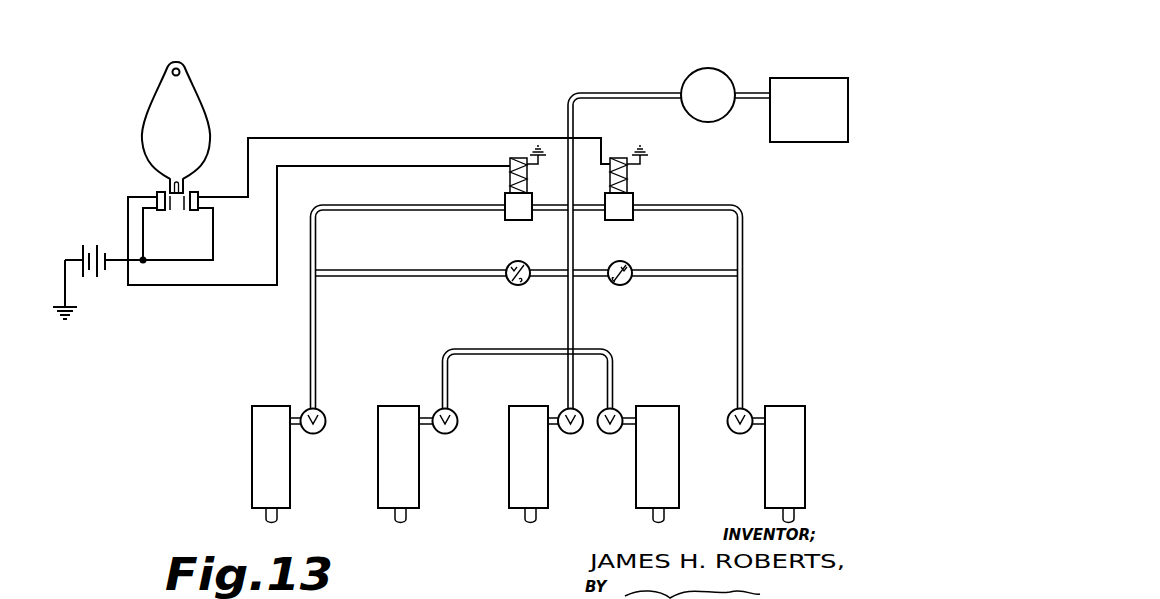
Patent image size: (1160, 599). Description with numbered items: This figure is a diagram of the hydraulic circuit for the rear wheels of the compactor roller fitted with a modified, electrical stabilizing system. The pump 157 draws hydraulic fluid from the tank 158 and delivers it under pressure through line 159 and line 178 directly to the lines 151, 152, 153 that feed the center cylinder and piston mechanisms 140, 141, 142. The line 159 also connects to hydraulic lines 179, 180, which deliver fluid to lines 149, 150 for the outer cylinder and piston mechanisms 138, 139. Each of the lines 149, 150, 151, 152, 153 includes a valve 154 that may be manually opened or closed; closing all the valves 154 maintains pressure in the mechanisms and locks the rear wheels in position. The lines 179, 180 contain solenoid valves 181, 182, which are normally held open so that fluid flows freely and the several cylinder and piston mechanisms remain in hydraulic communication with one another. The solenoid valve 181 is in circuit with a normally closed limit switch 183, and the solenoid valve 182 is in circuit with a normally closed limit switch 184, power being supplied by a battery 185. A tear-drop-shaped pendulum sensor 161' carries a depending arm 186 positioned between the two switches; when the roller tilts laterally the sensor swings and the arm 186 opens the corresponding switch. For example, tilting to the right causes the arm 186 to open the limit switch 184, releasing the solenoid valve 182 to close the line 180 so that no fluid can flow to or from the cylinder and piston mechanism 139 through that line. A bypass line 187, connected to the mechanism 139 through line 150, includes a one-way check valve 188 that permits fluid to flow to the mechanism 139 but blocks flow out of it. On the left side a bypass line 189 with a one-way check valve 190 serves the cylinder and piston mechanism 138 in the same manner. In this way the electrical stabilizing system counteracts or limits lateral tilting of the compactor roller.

The sensor 161' is at (138, 127).
The depending arm 186 is at (177, 185).
The limit switch 183 is at (157, 195).
The limit switch 184 is at (193, 193).
The battery 185 is at (93, 283).
The pump 157 is at (718, 70).
The tank 158 is at (803, 82).
The hydraulic line 159 is at (618, 93).
The hydraulic line 178 is at (574, 242).
The hydraulic line 179 is at (365, 207).
The hydraulic line 180 is at (740, 203).
The solenoid valve 181 is at (503, 198).
The solenoid valve 182 is at (633, 198).
The bypass line 187 is at (680, 268).
The one-way check valve 188 is at (628, 282).
The bypass line 189 is at (392, 270).
The one-way check valve 190 is at (512, 262).
The hydraulic line 149 is at (310, 375).
The hydraulic line 150 is at (745, 383).
The hydraulic line 151 is at (442, 378).
The hydraulic line 152 is at (612, 378).
The hydraulic line 153 is at (568, 380).
The valve 154 is at (320, 433).
The hydraulic cylinder and piston mechanism 138 is at (258, 488).
The hydraulic cylinder and piston mechanism 139 is at (773, 488).
The hydraulic cylinder and piston mechanism 140 is at (385, 488).
The hydraulic cylinder and piston mechanism 141 is at (643, 488).
The hydraulic cylinder and piston mechanism 142 is at (515, 490).